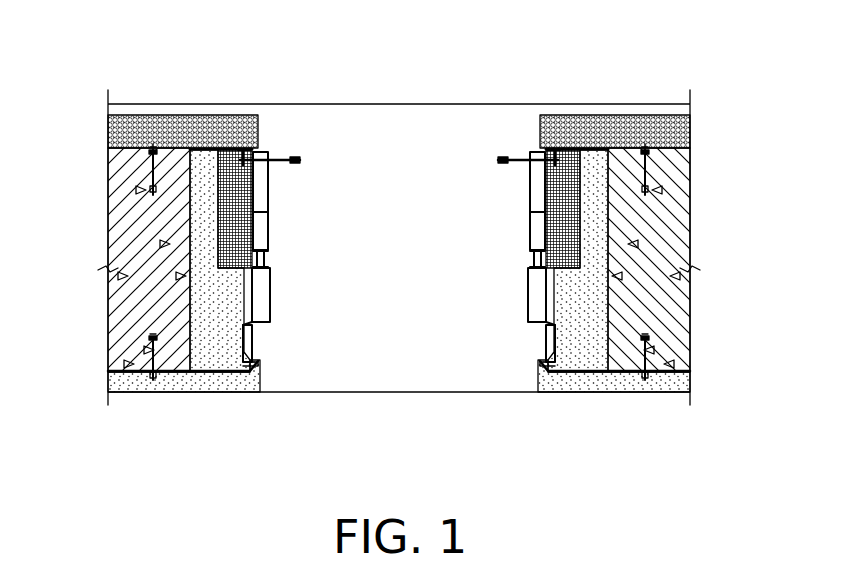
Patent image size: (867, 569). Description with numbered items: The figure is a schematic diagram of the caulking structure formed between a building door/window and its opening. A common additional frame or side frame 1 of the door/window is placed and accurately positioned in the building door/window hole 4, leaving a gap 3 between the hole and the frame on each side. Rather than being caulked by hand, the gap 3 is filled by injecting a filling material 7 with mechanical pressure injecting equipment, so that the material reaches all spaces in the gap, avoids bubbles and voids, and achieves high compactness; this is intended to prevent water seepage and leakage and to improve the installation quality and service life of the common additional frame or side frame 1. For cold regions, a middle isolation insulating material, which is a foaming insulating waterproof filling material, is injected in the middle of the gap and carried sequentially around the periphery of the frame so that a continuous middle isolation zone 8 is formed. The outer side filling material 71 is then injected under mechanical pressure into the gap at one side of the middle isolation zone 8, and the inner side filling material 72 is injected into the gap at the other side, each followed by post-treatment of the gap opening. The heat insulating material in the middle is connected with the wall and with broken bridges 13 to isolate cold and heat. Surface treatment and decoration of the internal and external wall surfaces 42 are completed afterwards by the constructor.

The common additional frame or side frame 1 is at (268, 303).
The gap 3 is at (541, 193).
The broken bridge 13 is at (531, 250).
The building door/window hole 4 is at (187, 193).
The internal and external wall surfaces 42 is at (196, 150).
The filling material 7 is at (258, 153).
The outer side filling material 71 is at (399, 160).
The middle isolation zone 8 is at (218, 270).
The inner side filling material 72 is at (230, 270).